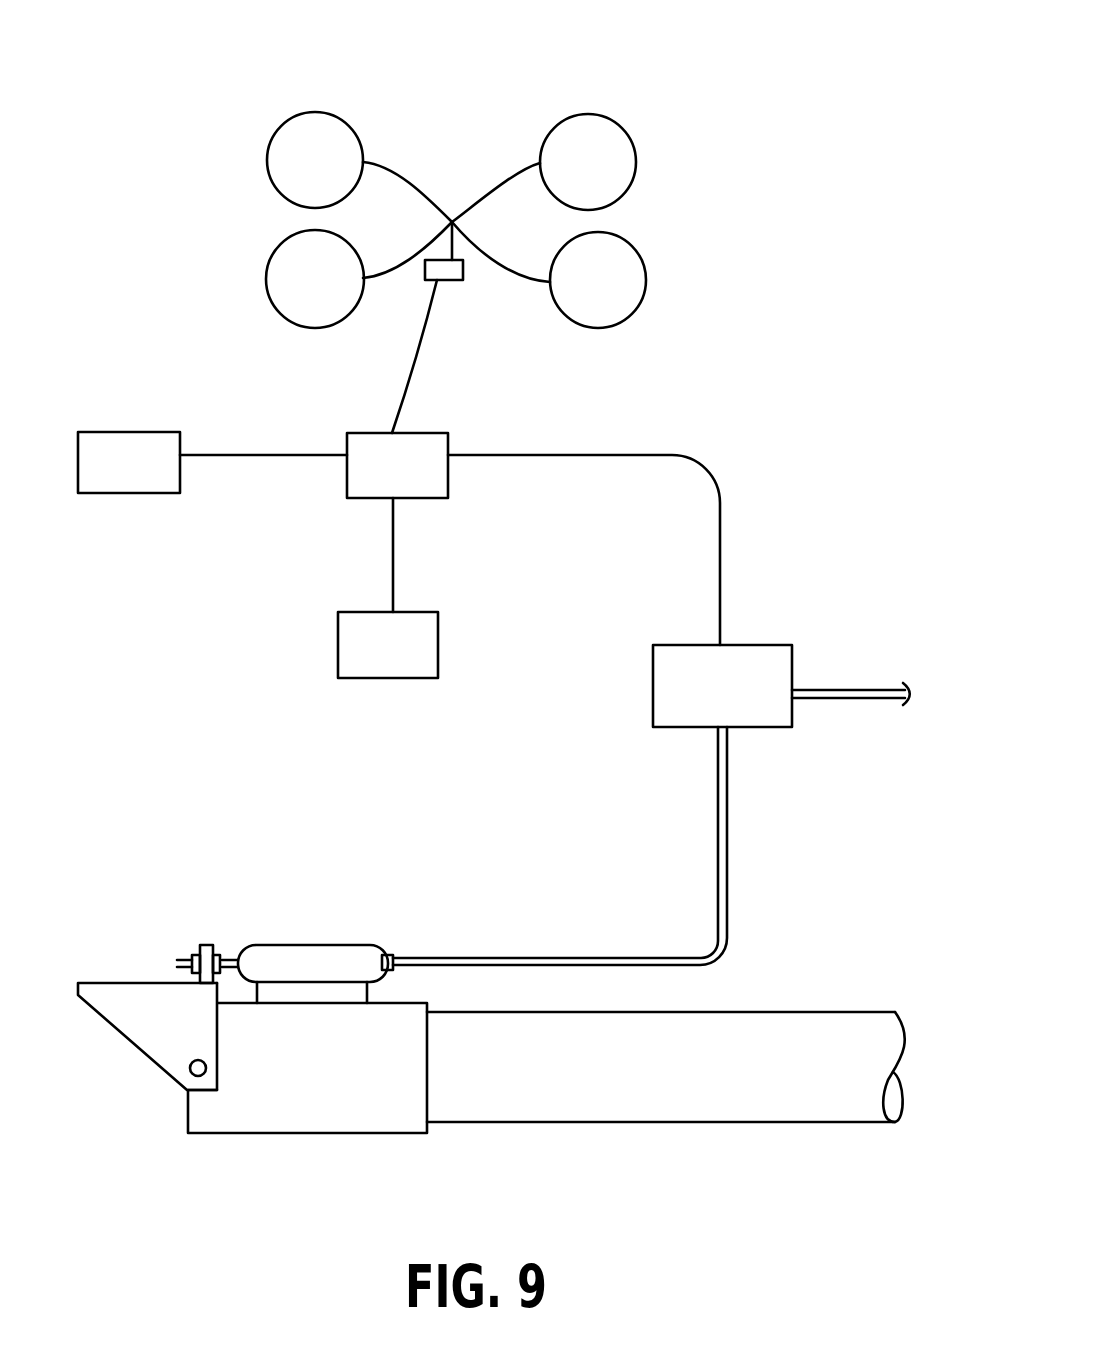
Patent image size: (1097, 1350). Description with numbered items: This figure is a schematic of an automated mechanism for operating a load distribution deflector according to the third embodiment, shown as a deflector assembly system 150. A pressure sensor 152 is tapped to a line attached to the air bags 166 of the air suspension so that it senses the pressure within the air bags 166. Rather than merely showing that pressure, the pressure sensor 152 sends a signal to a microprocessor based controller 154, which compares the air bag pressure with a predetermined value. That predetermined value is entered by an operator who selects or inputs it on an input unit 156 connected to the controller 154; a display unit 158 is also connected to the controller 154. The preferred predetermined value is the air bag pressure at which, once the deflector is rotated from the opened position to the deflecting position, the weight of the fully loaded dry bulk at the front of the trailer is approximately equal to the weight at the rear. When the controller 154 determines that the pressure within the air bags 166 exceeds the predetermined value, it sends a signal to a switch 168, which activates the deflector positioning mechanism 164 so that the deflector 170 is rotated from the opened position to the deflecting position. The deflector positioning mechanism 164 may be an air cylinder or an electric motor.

The deflector assembly system 150 is at (637, 99).
The pressure sensor 152 is at (463, 268).
The microprocessor based controller 154 is at (415, 432).
The input unit 156 is at (110, 430).
The display unit 158 is at (403, 680).
The deflector positioning mechanism 164 is at (293, 950).
The air bags 166 is at (267, 157).
The switch 168 is at (732, 643).
The deflector 170 is at (140, 1008).